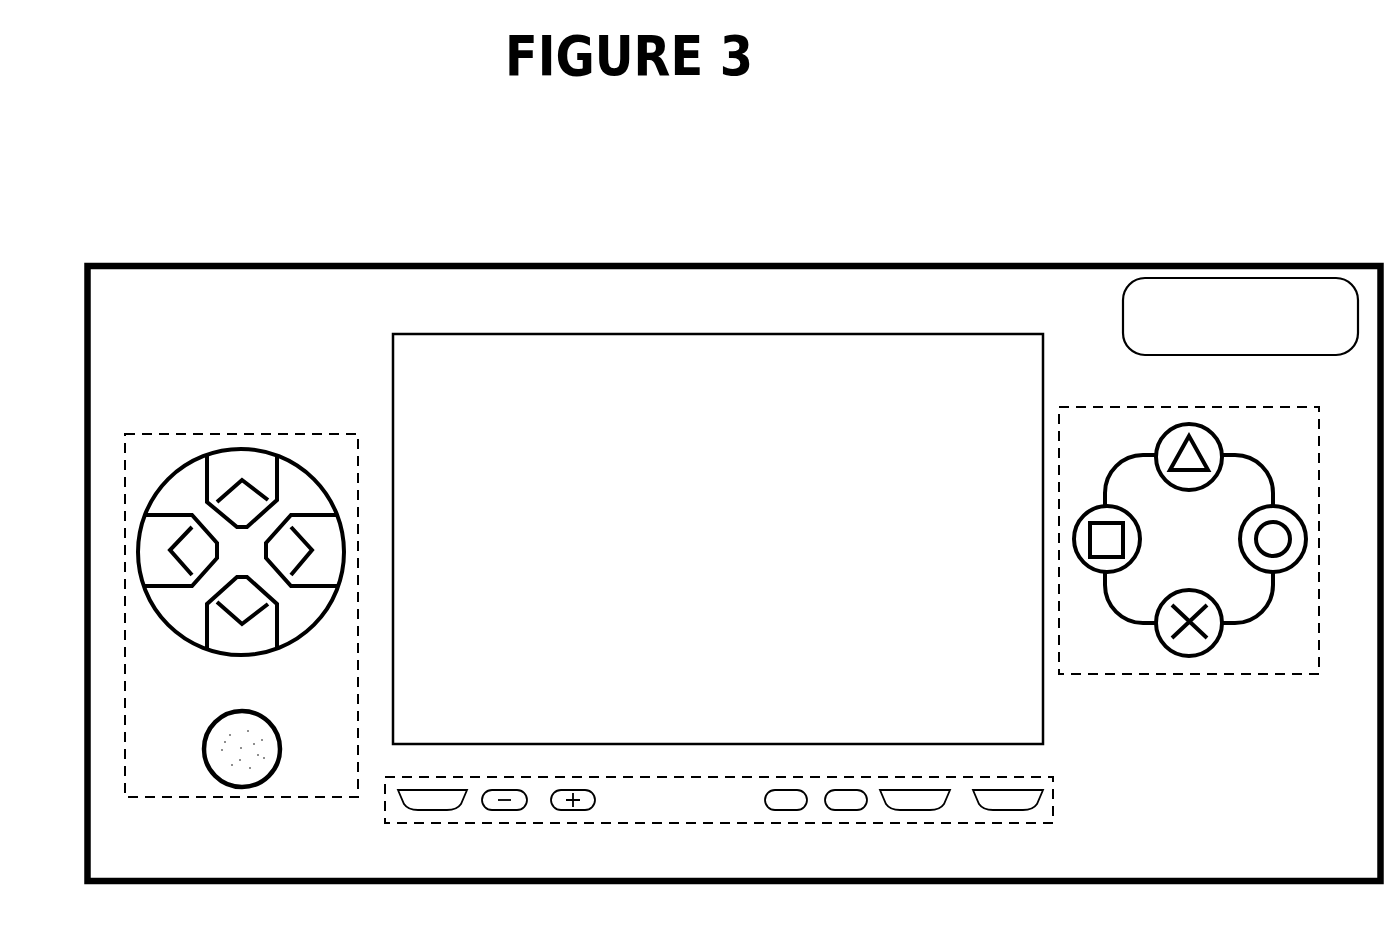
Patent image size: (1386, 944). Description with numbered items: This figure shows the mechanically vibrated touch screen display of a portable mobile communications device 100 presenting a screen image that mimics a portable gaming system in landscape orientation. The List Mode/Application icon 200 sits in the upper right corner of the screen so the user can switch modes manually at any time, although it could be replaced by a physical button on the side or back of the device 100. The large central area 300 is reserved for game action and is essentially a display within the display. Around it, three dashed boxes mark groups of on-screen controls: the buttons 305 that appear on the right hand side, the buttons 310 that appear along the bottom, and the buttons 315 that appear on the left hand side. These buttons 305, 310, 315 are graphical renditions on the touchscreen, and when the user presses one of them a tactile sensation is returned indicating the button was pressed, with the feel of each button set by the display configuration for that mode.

The portable mobile communications device 100 is at (318, 262).
The List Mode/Application icon 200 is at (1123, 315).
The game action area 300 is at (393, 370).
The right hand side buttons 305 is at (1152, 675).
The bottom buttons 310 is at (697, 823).
The left hand side buttons 315 is at (217, 797).